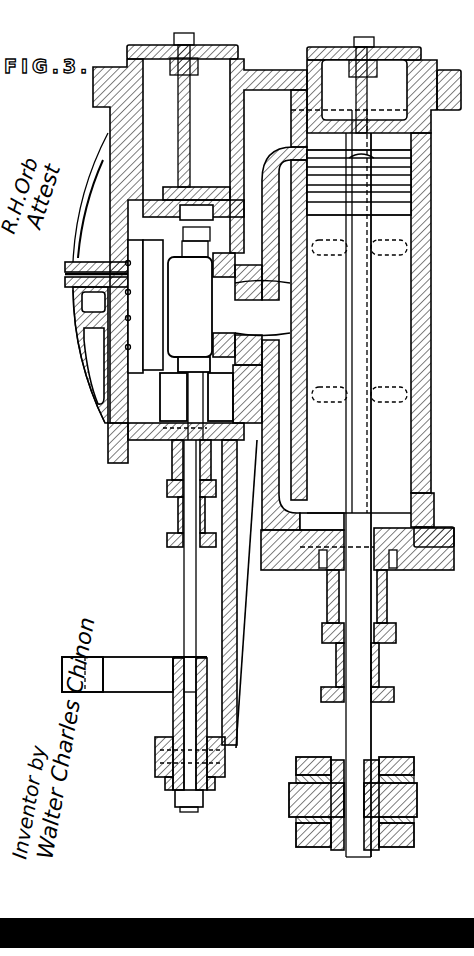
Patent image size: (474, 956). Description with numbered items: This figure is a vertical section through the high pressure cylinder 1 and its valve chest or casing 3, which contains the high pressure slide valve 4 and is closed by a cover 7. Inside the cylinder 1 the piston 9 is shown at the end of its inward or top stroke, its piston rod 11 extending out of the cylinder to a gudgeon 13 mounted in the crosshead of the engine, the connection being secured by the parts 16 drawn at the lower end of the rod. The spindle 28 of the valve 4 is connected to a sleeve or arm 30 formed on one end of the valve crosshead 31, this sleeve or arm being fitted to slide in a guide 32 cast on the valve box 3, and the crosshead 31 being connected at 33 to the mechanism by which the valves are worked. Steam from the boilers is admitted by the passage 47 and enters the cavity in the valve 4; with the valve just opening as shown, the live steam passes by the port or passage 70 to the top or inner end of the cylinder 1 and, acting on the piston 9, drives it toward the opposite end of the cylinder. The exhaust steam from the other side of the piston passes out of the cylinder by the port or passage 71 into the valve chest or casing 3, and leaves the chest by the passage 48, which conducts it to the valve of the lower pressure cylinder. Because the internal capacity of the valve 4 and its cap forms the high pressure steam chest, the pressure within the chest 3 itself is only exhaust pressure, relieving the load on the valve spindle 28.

The high pressure cylinder 1 is at (402, 328).
The valve chest or casing 3 is at (145, 230).
The high pressure slide valve 4 is at (180, 317).
The cover 7 is at (100, 355).
The piston 9 is at (414, 188).
The piston rod 11 is at (345, 731).
The gudgeon 13 is at (412, 802).
The lock nuts 16 is at (296, 823).
The valve spindle 28 is at (192, 582).
The sleeve or arm 30 is at (173, 717).
The crosshead 31 is at (134, 674).
The guide 32 is at (156, 756).
The connection point of crosshead 33 is at (82, 674).
The steam admission passage 47 is at (251, 309).
The exhaust passage 48 is at (173, 397).
The port or passage 70 is at (278, 262).
The port or passage 71 is at (268, 366).